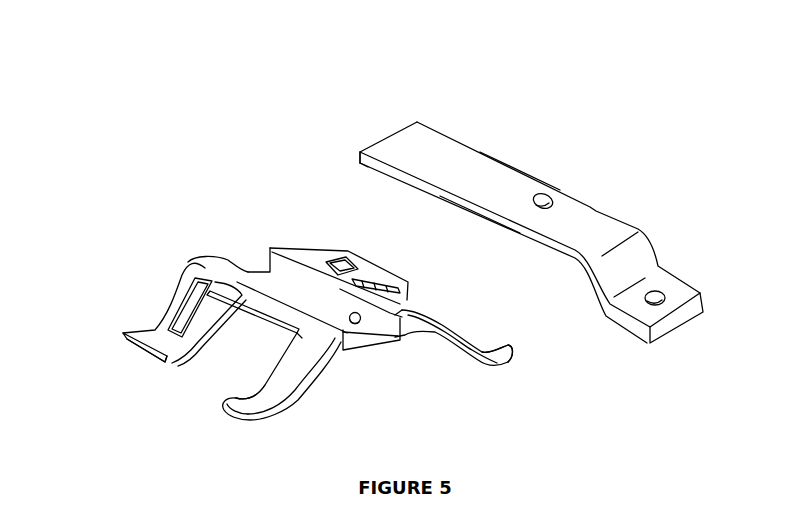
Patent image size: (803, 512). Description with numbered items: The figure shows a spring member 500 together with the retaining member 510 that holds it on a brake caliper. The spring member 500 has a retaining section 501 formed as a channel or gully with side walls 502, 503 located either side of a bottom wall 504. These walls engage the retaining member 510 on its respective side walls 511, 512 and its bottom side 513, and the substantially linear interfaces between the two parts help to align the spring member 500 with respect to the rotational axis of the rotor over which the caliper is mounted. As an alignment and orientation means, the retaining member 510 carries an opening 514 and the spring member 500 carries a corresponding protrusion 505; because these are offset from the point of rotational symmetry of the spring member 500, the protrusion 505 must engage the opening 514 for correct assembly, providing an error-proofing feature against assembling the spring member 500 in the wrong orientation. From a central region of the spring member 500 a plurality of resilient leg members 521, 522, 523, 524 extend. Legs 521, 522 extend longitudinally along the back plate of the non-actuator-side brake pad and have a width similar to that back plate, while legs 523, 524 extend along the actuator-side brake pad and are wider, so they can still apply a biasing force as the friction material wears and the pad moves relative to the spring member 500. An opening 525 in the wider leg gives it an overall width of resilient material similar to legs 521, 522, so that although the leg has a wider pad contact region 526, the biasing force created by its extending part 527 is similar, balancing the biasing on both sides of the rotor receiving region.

The spring member 500 is at (205, 268).
The retaining section 501 is at (259, 246).
The side wall 502 is at (315, 352).
The side wall 503 is at (437, 336).
The bottom wall 504 is at (376, 342).
The protrusion 505 is at (365, 318).
The retaining member 510 is at (423, 137).
The side wall 511 is at (368, 165).
The side wall 512 is at (528, 165).
The bottom side 513 is at (463, 233).
The opening 514 is at (545, 200).
The resilient leg member 521 is at (265, 385).
The resilient leg member 522 is at (493, 346).
The resilient leg member 523 is at (348, 251).
The resilient leg member 524 is at (128, 333).
The opening 525 is at (207, 296).
The pad contact region 526 is at (168, 366).
The extending part 527 is at (203, 335).